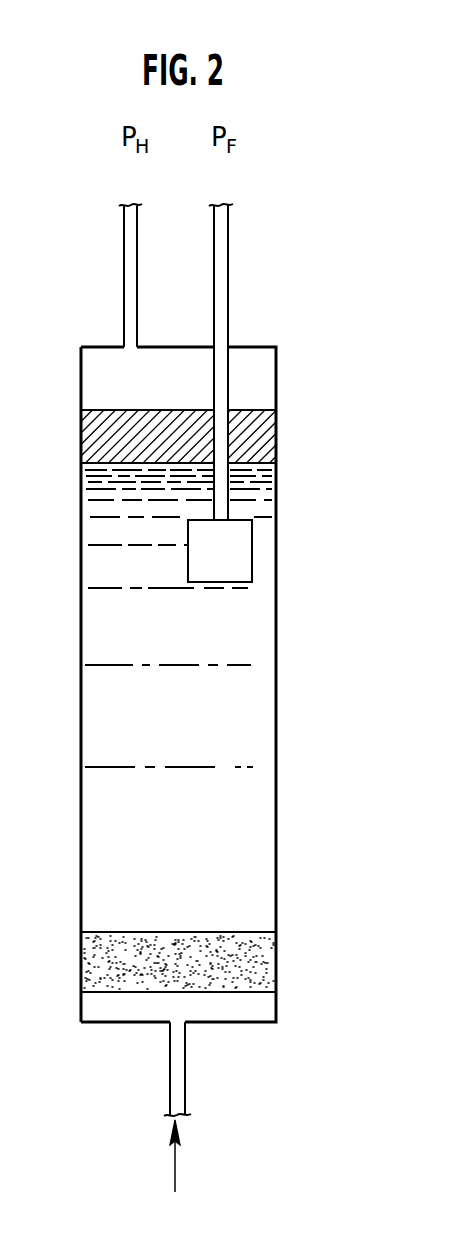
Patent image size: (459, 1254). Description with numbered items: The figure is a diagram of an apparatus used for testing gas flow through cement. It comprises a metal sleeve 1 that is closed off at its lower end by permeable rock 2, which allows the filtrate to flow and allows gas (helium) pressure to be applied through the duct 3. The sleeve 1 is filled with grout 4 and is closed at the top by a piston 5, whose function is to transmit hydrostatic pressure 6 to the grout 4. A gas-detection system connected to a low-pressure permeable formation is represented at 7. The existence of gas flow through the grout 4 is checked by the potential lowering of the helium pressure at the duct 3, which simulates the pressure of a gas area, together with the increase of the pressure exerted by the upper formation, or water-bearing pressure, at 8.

The metal sleeve 1 is at (282, 698).
The permeable rock 2 is at (258, 970).
The duct 3 is at (175, 1158).
The grout 4 is at (96, 784).
The piston 5 is at (86, 437).
The hydrostatic pressure 6 is at (131, 204).
The gas-detection system 7 is at (243, 548).
The water-bearing pressure 8 is at (220, 204).